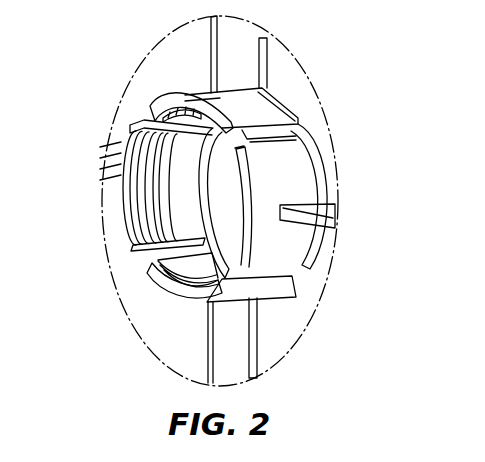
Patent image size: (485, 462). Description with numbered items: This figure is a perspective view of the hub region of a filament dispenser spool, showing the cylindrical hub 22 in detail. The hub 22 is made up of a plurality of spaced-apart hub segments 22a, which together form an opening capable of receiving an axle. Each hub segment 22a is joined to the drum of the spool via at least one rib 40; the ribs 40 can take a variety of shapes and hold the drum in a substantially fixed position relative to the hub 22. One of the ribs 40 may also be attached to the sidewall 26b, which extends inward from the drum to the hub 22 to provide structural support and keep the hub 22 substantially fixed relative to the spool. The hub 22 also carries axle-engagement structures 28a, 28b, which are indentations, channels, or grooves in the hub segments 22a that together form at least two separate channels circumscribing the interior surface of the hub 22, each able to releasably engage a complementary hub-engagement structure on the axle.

The cylindrical hub 22 is at (269, 98).
The hub segments 22a is at (205, 92).
The sidewall 26b is at (125, 263).
The axle-engagement structure 28a is at (298, 123).
The axle-engagement structure 28b is at (235, 148).
The rib 40 is at (227, 348).